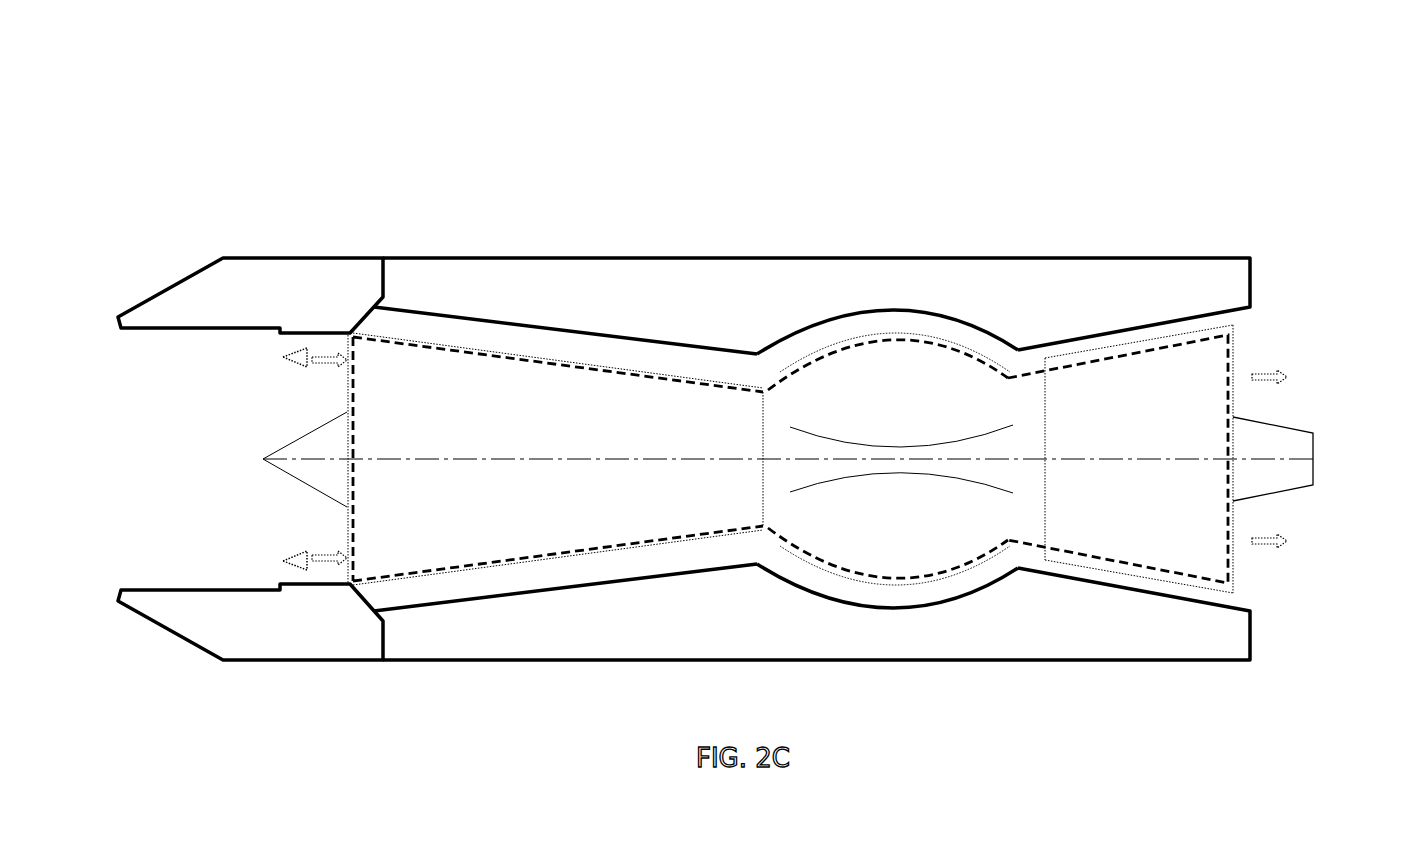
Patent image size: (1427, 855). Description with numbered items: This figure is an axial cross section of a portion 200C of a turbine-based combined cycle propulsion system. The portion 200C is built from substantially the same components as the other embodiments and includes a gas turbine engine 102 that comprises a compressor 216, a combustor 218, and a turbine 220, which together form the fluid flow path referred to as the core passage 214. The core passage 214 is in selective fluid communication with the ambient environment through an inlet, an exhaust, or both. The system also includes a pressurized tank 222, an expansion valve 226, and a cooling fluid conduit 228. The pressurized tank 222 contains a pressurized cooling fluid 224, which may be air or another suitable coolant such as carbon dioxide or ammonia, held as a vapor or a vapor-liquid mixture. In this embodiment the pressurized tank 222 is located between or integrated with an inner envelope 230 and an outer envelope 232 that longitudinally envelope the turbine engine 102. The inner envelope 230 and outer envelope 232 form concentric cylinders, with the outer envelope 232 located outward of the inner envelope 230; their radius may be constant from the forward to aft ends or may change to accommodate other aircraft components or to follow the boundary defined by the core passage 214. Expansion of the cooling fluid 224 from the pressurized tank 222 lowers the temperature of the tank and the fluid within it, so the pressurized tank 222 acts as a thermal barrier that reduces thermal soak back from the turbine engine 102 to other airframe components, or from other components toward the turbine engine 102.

The portion of turbine-based combined cycle propulsion system 200C is at (148, 112).
The gas turbine engine 102 is at (1343, 165).
The core passage 214 is at (640, 378).
The compressor 216 is at (463, 509).
The combustor 218 is at (870, 412).
The turbine 220 is at (1111, 417).
The pressurized tank 222 is at (568, 275).
The cooling fluid 224 is at (320, 370).
The expansion valve 226 is at (273, 357).
The cooling fluid conduit 228 is at (277, 578).
The inner envelope 230 is at (910, 307).
The outer envelope 232 is at (1118, 257).